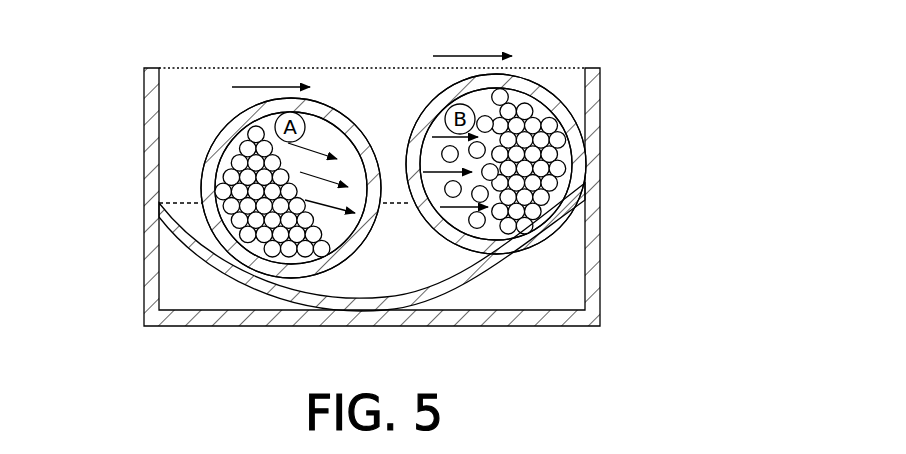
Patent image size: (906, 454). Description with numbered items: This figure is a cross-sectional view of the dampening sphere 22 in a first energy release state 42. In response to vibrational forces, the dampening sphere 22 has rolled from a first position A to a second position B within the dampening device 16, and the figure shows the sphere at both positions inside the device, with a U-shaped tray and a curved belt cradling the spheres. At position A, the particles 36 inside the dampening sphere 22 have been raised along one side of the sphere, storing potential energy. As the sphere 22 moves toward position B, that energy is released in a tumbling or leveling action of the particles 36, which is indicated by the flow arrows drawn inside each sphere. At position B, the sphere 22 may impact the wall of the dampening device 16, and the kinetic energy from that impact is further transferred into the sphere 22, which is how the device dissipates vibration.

The dampening device 16 is at (144, 270).
The dampening sphere 22 is at (241, 117).
The particles 36 is at (242, 177).
The first energy release state 42 is at (636, 188).